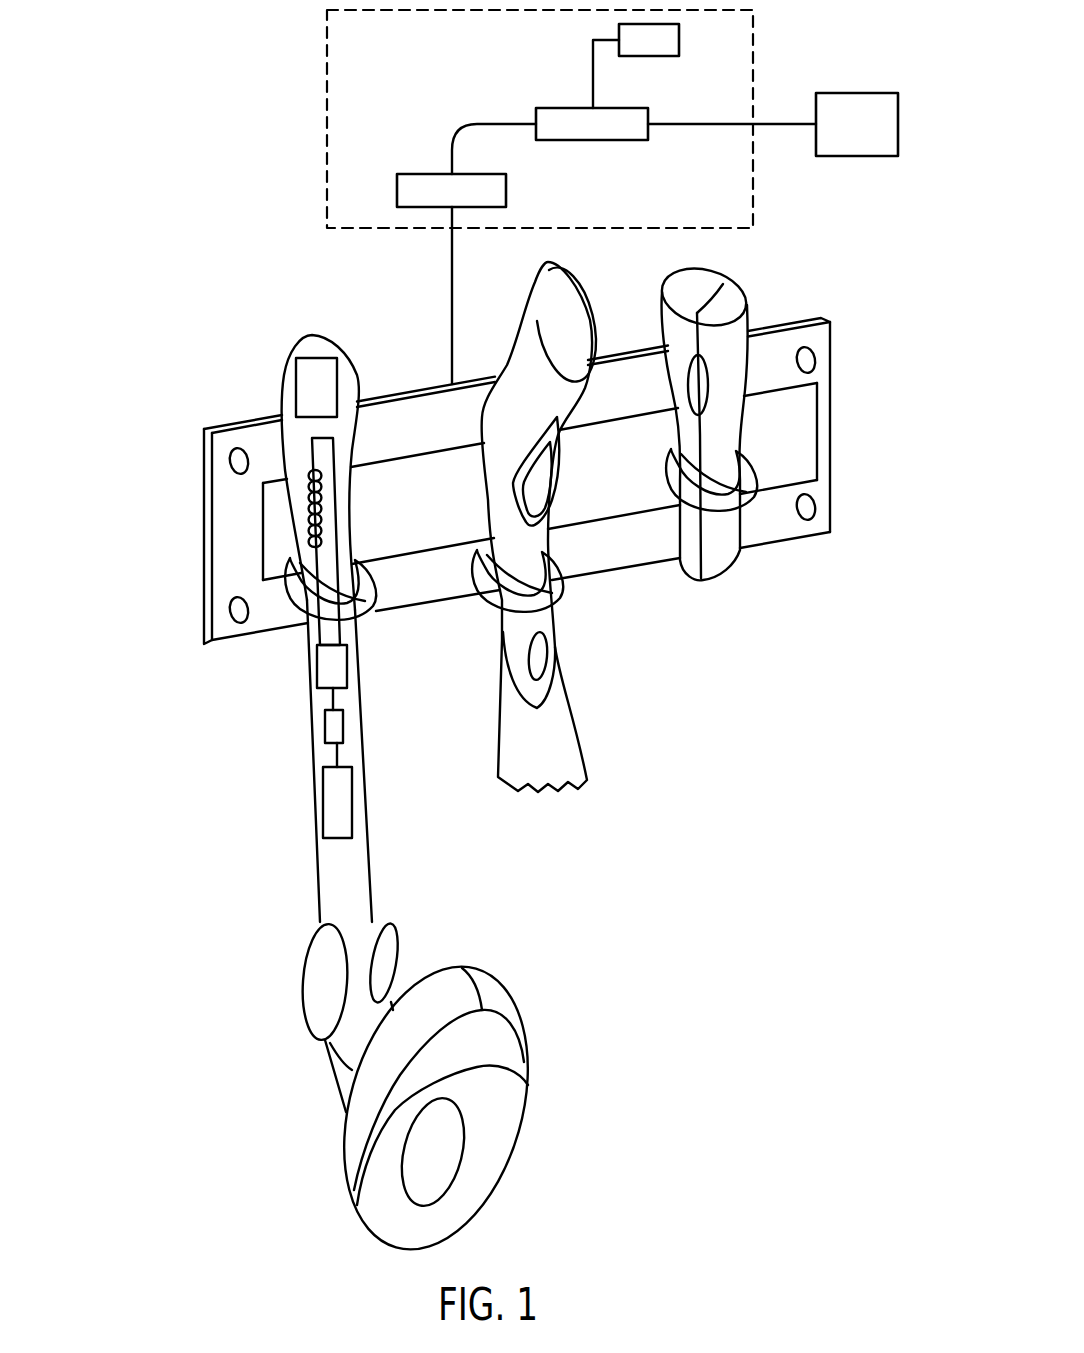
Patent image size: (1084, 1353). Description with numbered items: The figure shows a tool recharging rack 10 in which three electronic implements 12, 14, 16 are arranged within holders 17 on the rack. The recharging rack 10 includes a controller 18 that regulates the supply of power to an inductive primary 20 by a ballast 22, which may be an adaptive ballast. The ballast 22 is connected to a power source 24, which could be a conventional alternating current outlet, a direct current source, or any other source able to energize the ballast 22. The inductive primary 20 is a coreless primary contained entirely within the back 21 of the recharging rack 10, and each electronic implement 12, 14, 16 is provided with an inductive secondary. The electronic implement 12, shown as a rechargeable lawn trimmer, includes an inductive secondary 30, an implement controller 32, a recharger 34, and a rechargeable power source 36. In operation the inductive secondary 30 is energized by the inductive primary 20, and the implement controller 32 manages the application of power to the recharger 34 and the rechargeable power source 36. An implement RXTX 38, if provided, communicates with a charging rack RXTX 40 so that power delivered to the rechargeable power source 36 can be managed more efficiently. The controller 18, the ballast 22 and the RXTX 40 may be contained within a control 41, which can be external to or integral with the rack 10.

The tool recharging rack 10 is at (182, 542).
The electronic implement 12 is at (394, 937).
The electronic implement 14 is at (586, 767).
The electronic implement 16 is at (725, 582).
The holders 17 is at (377, 583).
The controller 18 is at (609, 140).
The inductive primary 20 is at (392, 458).
The back 21 is at (832, 378).
The ballast 22 is at (397, 190).
The power source 24 is at (876, 93).
The inductive secondary 30 is at (352, 505).
The implement controller 32 is at (317, 667).
The recharger 34 is at (325, 731).
The rechargeable power source 36 is at (323, 805).
The implement RXTX 38 is at (297, 378).
The charging rack RXTX 40 is at (679, 40).
The control 41 is at (753, 22).